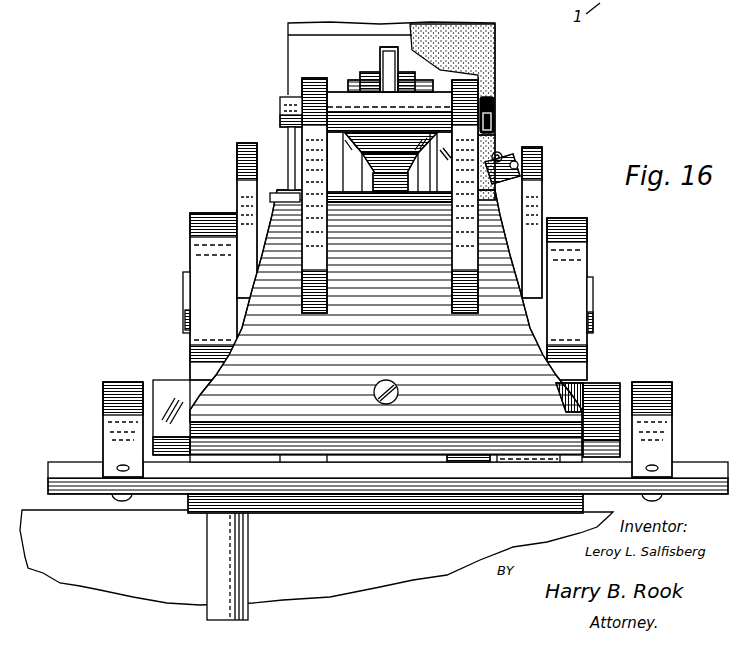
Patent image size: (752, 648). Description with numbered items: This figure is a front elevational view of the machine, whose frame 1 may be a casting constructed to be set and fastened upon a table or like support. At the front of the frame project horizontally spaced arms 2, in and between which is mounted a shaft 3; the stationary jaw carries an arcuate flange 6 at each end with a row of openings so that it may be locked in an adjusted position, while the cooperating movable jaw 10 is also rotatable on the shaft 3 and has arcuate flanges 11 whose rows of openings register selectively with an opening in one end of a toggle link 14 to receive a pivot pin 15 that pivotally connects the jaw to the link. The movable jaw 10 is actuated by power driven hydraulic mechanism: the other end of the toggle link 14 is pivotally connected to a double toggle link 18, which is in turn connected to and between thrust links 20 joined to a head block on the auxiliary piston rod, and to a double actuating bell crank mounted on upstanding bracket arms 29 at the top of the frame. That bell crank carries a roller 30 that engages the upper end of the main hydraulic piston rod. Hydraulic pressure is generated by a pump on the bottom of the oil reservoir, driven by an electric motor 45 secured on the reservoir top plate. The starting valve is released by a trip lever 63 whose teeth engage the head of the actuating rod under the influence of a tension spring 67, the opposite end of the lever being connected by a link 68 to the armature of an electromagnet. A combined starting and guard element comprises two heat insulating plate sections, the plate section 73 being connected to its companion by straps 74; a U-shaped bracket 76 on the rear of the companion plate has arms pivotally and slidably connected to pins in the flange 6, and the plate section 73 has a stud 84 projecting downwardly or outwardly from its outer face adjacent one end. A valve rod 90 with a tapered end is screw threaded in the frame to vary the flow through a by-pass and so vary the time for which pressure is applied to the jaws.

The frame 1 is at (195, 370).
The arms 2 is at (190, 305).
The shaft 3 is at (185, 280).
The arcuate flange 6 is at (236, 195).
The movable jaw 10 is at (560, 379).
The arcuate flanges 11 is at (308, 133).
The toggle link 14 is at (338, 94).
The pivot pin 15 is at (500, 113).
The double toggle link 18 is at (365, 74).
The thrust links 20 is at (351, 80).
The bracket arms 29 is at (333, 177).
The roller 30 is at (378, 80).
The electric motor 45 is at (497, 78).
The trip lever 63 is at (513, 173).
The tension spring 67 is at (455, 167).
The link 68 is at (520, 187).
The plate section 73 is at (305, 482).
The straps 74 is at (117, 382).
The U-shaped bracket 76 is at (305, 462).
The stud 84 is at (213, 560).
The valve rod 90 is at (397, 47).